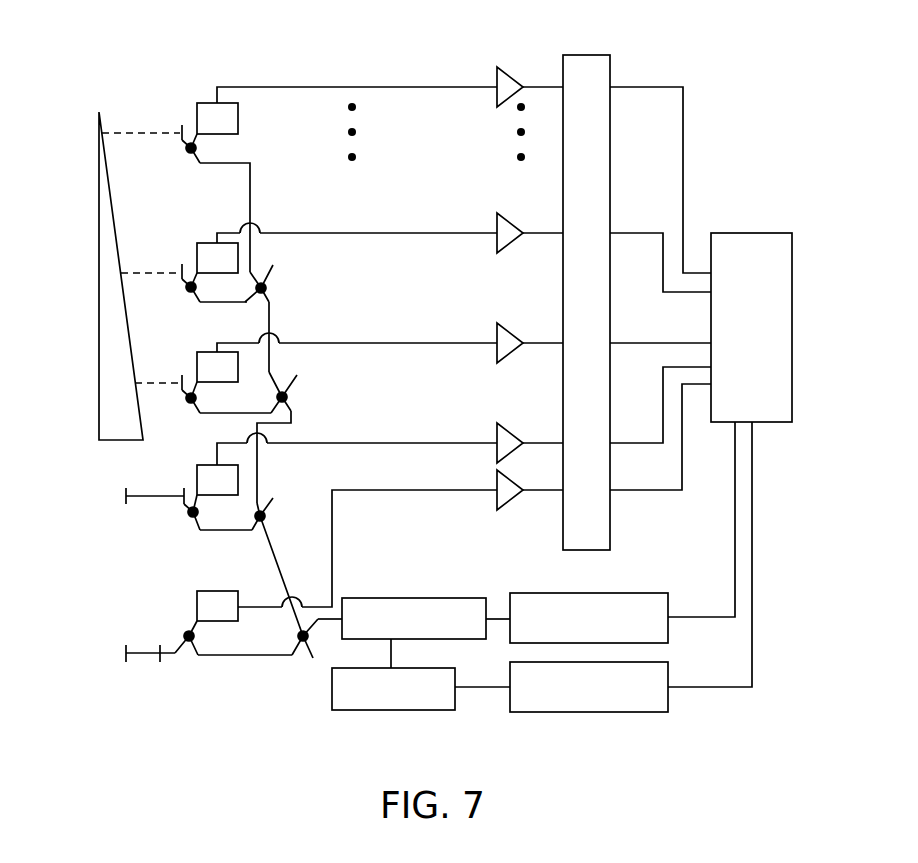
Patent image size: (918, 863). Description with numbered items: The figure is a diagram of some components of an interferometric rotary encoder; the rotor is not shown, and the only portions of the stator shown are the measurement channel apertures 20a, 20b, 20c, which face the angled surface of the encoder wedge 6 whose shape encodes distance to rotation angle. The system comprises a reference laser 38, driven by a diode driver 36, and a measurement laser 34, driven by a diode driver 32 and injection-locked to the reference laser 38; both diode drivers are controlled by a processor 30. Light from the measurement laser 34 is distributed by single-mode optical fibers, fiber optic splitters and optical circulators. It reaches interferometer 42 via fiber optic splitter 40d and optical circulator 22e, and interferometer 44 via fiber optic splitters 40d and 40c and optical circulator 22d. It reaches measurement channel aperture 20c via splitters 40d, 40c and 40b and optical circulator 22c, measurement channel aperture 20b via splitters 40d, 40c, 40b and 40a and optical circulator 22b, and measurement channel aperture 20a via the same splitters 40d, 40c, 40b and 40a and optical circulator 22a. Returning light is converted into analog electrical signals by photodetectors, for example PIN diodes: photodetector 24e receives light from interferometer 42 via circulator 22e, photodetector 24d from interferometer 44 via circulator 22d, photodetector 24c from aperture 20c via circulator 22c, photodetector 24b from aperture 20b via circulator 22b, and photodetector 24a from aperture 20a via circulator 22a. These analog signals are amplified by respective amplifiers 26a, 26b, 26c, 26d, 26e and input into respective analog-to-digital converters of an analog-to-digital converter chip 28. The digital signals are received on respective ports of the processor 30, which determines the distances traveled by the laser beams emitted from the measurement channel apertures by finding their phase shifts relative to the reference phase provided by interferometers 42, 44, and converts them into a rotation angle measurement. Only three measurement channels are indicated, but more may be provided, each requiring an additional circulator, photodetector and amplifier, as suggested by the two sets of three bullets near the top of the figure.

The encoder wedge 6 is at (99, 295).
The measurement channel aperture 20a is at (181, 127).
The measurement channel aperture 20b is at (181, 267).
The measurement channel aperture 20c is at (181, 377).
The optical circulator 22a is at (191, 148).
The optical circulator 22b is at (191, 287).
The optical circulator 22c is at (191, 398).
The optical circulator 22d is at (193, 512).
The optical circulator 22e is at (189, 636).
The photodetector 24a is at (238, 120).
The photodetector 24b is at (238, 262).
The photodetector 24c is at (238, 368).
The photodetector 24d is at (238, 477).
The photodetector 24e is at (219, 591).
The amplifier 26a is at (505, 77).
The amplifier 26b is at (505, 222).
The amplifier 26c is at (507, 327).
The amplifier 26d is at (505, 428).
The amplifier 26e is at (507, 503).
The analog-to-digital converter chip 28 is at (611, 70).
The processor 30 is at (745, 233).
The diode driver 32 is at (638, 593).
The measurement laser 34 is at (435, 598).
The diode driver 36 is at (622, 712).
The reference laser 38 is at (362, 710).
The fiber optic splitter 40a is at (265, 286).
The fiber optic splitter 40b is at (286, 400).
The fiber optic splitter 40c is at (264, 518).
The fiber optic splitter 40d is at (300, 634).
The interferometer 42 is at (122, 643).
The interferometer 44 is at (122, 514).